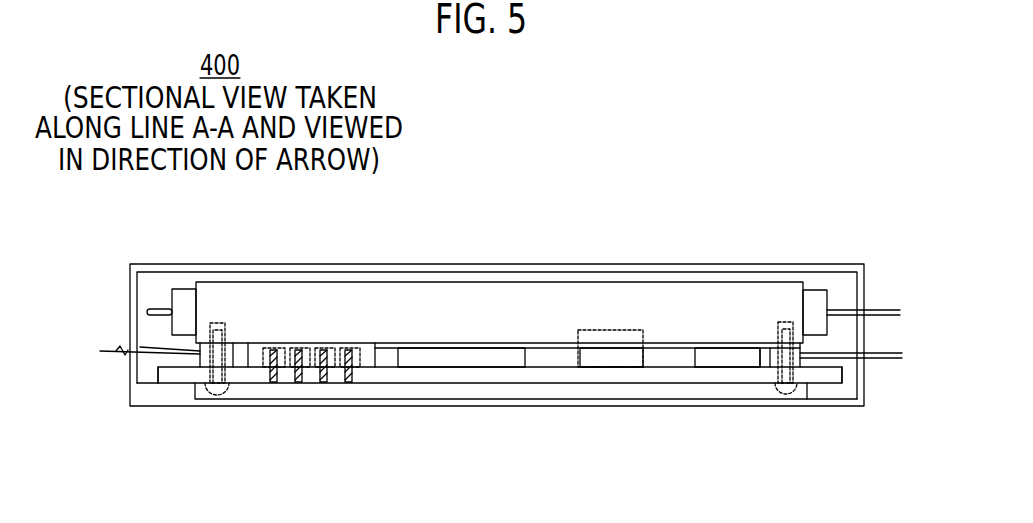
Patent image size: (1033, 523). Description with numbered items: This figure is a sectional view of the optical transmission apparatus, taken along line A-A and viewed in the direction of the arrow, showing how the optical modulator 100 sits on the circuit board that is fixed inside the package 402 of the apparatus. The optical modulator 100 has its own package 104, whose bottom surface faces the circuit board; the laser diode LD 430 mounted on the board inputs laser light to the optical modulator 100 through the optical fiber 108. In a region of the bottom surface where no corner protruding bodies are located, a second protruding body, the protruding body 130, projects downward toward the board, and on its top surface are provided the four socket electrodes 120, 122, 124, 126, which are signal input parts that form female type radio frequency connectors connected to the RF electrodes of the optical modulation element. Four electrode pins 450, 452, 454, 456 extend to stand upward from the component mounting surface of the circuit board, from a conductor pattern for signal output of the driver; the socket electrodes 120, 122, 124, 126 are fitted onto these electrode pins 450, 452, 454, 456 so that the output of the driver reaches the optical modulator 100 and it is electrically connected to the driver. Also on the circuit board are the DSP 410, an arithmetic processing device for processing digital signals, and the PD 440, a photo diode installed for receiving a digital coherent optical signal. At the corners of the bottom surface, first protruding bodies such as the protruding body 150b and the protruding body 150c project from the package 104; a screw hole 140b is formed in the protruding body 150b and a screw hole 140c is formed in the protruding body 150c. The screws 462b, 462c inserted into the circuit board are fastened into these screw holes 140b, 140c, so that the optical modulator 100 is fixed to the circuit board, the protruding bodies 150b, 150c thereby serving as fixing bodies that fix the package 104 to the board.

The package 402 is at (487, 302).
The optical modulator 100 is at (523, 250).
The package 104 is at (523, 267).
The optical fiber 108 is at (500, 413).
The socket electrode 120 is at (268, 350).
The socket electrode 122 is at (297, 350).
The socket electrode 124 is at (325, 350).
The socket electrode 126 is at (352, 350).
The protruding body 130 is at (255, 360).
The screw hole 140b is at (192, 367).
The screw hole 140c is at (875, 377).
The protruding body 150b is at (121, 353).
The protruding body 150c is at (872, 342).
The DSP 410 is at (461, 420).
The LD 430 is at (610, 410).
The PD 440 is at (727, 419).
The electrode pin 450 is at (268, 383).
The electrode pin 452 is at (297, 383).
The electrode pin 454 is at (326, 383).
The electrode pin 456 is at (354, 383).
The screw 462b is at (197, 392).
The screw 462c is at (800, 392).